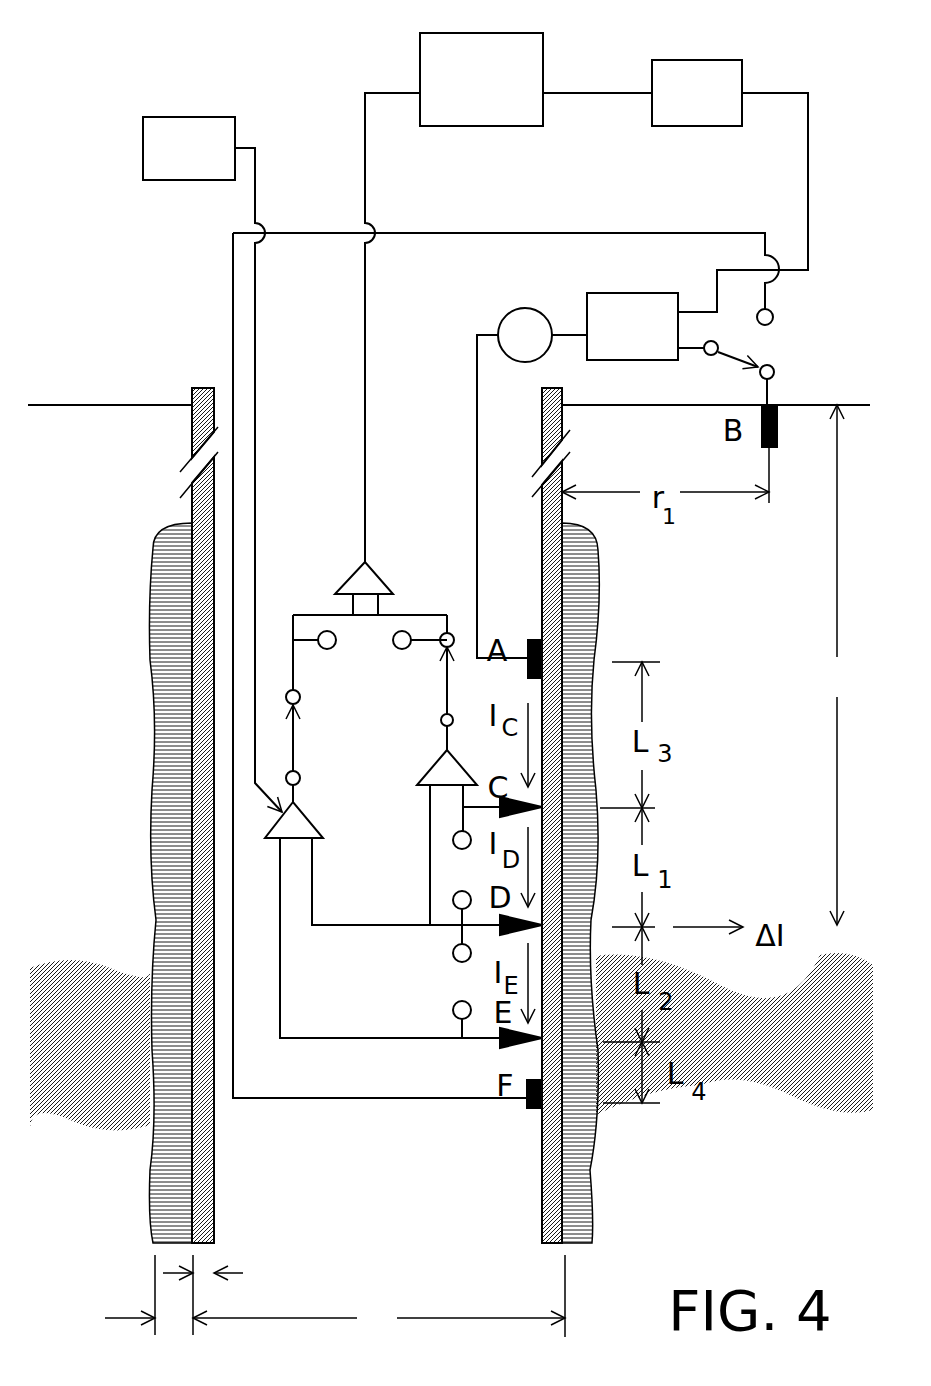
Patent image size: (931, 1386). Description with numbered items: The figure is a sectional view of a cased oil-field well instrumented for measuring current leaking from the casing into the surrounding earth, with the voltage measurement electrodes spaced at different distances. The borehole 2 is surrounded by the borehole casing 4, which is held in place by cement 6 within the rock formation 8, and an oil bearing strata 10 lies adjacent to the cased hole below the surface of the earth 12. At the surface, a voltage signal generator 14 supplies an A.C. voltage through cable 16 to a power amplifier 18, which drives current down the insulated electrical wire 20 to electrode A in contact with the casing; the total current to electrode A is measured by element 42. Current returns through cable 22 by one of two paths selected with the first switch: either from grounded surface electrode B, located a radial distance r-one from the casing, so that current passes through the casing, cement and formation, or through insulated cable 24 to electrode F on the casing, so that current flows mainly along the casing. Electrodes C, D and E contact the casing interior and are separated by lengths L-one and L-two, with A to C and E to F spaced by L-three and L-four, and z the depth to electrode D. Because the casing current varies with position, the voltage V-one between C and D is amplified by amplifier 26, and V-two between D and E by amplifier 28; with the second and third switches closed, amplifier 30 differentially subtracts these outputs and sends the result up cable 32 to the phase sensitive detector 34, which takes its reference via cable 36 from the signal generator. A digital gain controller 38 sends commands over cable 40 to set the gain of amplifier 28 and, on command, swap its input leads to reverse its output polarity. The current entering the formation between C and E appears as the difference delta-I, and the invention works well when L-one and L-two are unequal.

The borehole 2 is at (358, 1157).
The borehole casing 4 is at (545, 1160).
The cement 6 is at (583, 1147).
The rock formation 8 is at (743, 1122).
The oil bearing strata 10 is at (827, 1062).
The surface of the earth 12 is at (596, 408).
The voltage signal generator 14 is at (717, 59).
The cable 16 is at (808, 200).
The power amplifier 18 is at (587, 318).
The insulated electrical wire 20 is at (477, 365).
The cable 22 is at (695, 352).
The insulated cable 24 is at (497, 233).
The amplifier 26 is at (433, 765).
The amplifier 28 is at (308, 820).
The amplifier 30 is at (383, 580).
The cable 32 is at (365, 438).
The phase sensitive detector 34 is at (418, 60).
The cable 36 is at (567, 92).
The digital gain controller 38 is at (235, 135).
The cable 40 is at (253, 318).
The current measuring element 42 is at (498, 325).